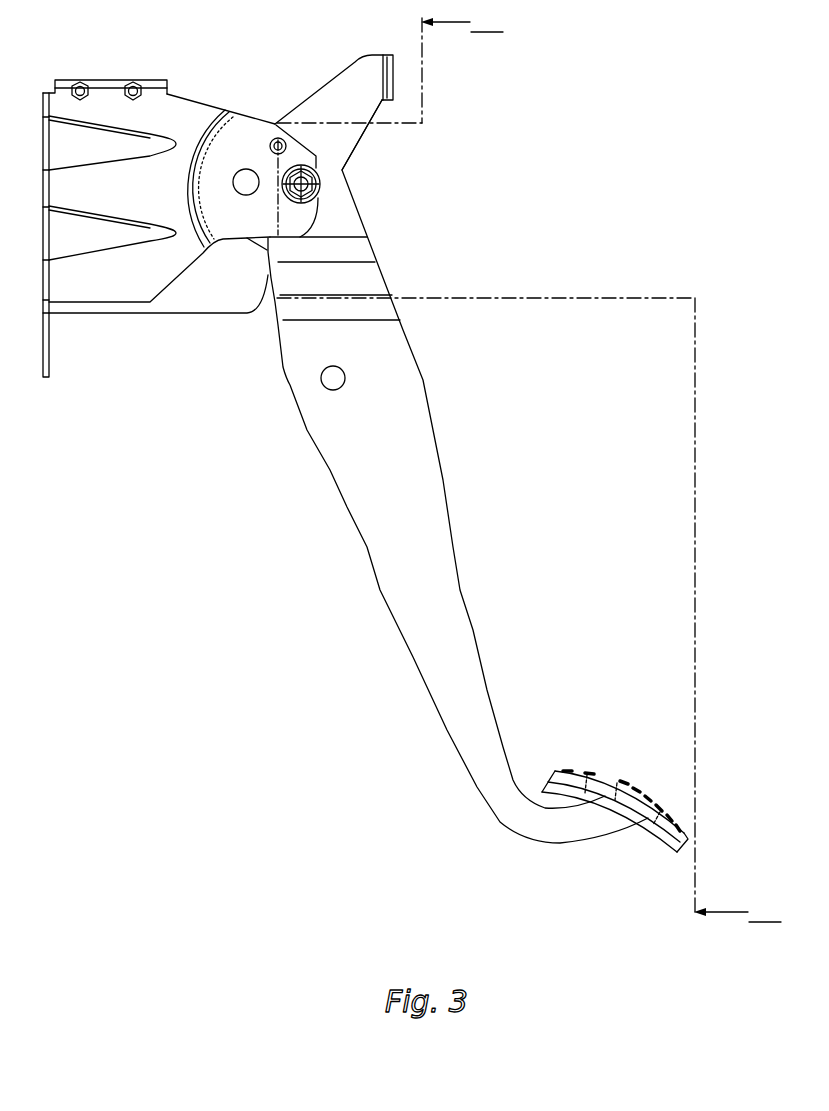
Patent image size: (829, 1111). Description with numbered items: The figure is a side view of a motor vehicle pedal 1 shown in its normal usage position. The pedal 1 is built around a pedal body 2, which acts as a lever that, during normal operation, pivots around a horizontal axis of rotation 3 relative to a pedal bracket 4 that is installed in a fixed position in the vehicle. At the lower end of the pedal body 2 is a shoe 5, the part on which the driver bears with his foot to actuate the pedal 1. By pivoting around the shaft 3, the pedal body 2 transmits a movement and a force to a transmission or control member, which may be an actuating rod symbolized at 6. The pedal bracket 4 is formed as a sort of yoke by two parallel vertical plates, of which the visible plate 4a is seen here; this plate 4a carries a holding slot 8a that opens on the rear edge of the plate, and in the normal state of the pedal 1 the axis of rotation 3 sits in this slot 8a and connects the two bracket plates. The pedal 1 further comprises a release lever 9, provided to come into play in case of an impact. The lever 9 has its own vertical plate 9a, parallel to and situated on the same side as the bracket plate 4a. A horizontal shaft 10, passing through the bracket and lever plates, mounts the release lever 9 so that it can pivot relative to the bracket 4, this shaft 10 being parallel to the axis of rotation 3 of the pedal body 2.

The motor vehicle pedal 1 is at (260, 512).
The pedal body 2 is at (417, 521).
The axis of rotation 3 is at (319, 173).
The pedal bracket 4 is at (105, 320).
The vertical plate 4a is at (179, 117).
The shoe 5 is at (648, 823).
The actuating rod 6 is at (321, 378).
The holding slot 8a is at (326, 201).
The release lever 9 is at (321, 80).
The vertical plate 9a is at (347, 137).
The horizontal shaft 10 is at (248, 169).